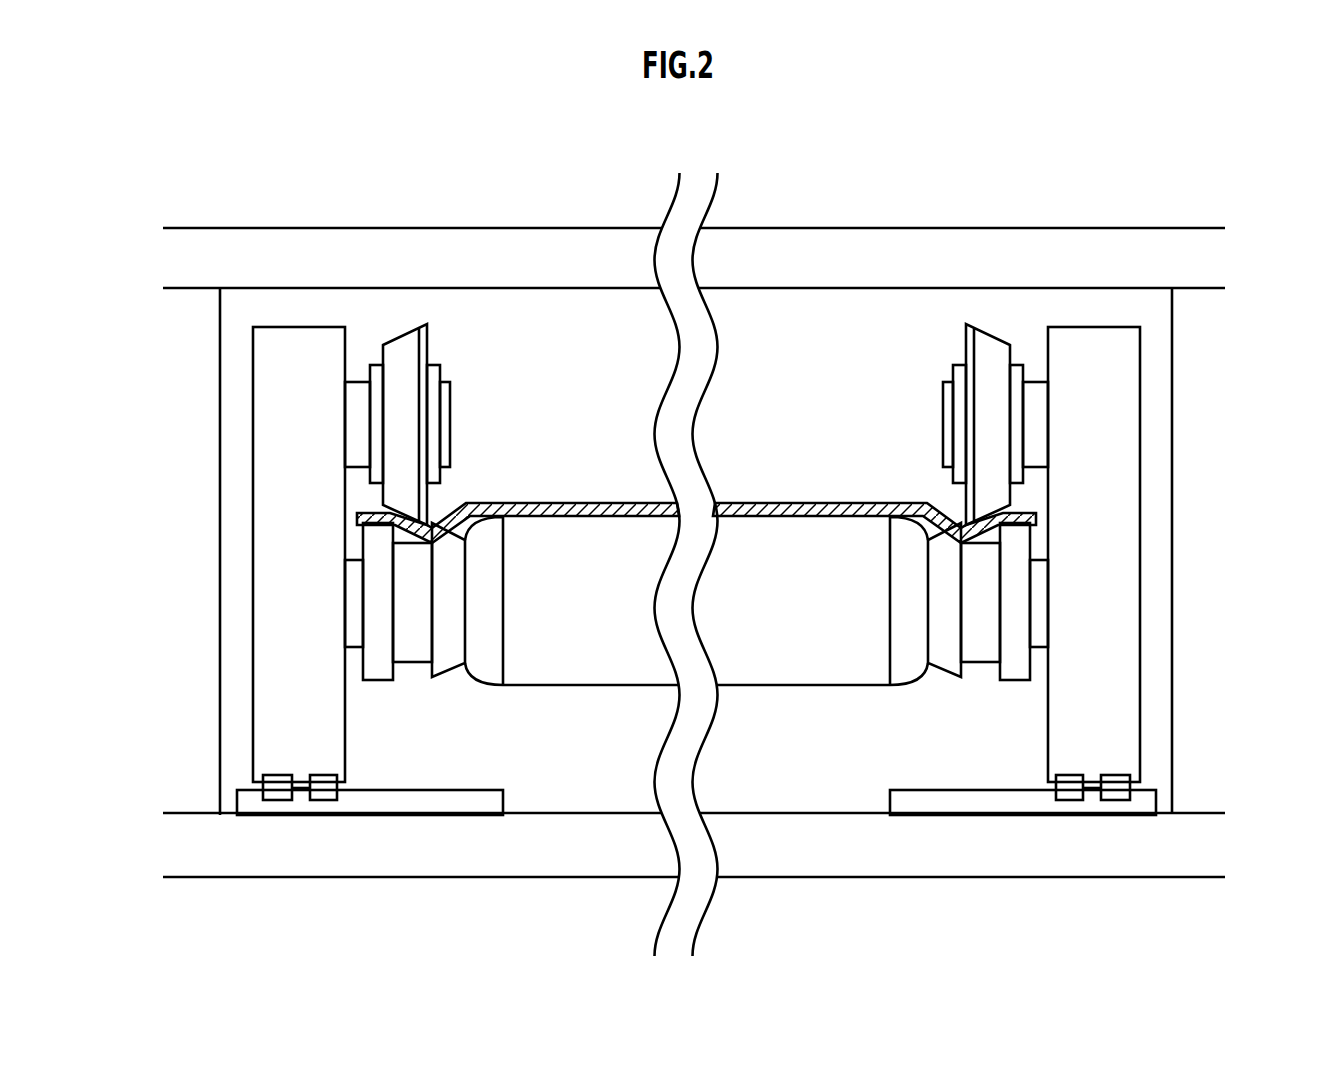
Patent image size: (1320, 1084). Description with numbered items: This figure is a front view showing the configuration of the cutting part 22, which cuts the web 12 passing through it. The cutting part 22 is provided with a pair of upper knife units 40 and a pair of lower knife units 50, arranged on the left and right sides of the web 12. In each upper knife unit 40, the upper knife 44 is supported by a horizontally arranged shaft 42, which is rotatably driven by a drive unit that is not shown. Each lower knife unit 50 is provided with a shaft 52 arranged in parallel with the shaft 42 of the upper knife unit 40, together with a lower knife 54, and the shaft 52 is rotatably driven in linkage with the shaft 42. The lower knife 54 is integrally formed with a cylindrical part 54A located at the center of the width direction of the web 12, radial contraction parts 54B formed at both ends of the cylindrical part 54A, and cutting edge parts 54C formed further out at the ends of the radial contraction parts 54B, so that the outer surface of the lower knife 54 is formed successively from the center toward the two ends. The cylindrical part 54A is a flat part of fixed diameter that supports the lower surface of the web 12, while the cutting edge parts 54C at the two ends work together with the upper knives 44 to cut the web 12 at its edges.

The cutting part 22 is at (569, 173).
The web 12 is at (534, 490).
The upper knife unit 40 is at (696, 417).
The upper knife 44 is at (428, 332).
The shaft 42 is at (357, 420).
The lower knife unit 50 is at (694, 652).
The shaft 52 is at (357, 605).
The lower knife 54 is at (689, 655).
The cylindrical part 54A is at (755, 663).
The radial contraction part 54B is at (478, 667).
The cutting edge part 54C is at (450, 653).